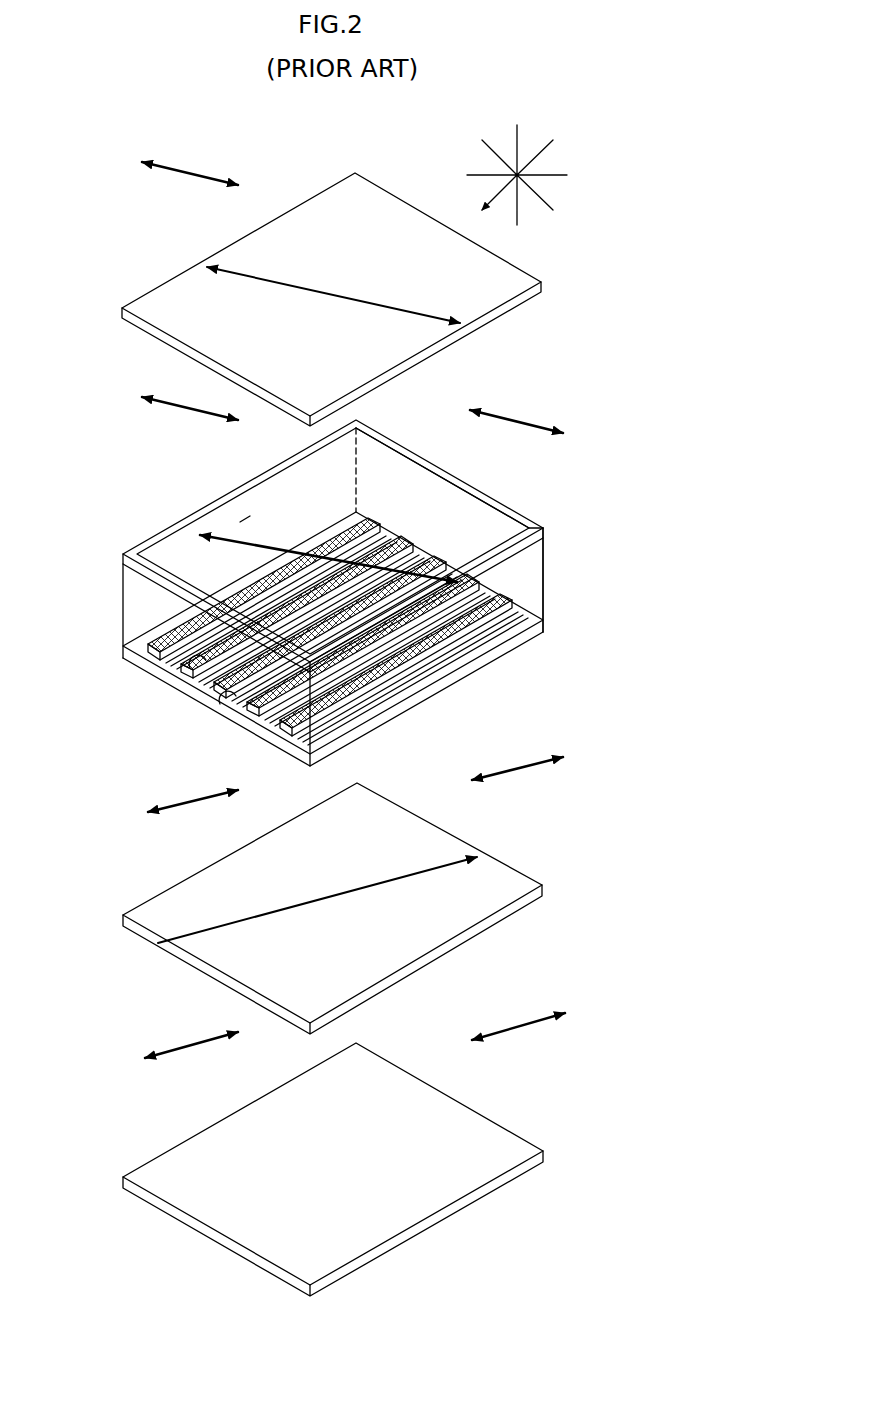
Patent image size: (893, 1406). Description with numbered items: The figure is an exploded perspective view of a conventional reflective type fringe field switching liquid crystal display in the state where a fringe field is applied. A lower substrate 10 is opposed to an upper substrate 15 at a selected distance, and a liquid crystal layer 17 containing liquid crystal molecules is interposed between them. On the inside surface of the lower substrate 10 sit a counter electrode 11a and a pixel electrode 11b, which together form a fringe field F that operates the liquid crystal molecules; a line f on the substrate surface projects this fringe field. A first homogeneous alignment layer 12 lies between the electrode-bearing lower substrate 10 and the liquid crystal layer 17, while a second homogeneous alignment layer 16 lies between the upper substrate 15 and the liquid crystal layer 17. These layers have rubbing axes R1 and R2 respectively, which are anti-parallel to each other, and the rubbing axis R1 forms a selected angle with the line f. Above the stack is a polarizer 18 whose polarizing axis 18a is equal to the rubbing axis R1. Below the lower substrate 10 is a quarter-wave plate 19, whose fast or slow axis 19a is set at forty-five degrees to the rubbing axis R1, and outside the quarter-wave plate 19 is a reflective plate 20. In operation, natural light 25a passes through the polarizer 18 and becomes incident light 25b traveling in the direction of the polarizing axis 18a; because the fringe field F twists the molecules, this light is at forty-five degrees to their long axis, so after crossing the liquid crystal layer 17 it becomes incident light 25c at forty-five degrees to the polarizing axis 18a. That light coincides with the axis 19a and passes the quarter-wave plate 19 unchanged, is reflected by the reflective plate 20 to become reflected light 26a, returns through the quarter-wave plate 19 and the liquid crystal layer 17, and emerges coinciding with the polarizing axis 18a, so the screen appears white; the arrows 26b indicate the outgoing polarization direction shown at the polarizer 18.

The lower substrate 10 is at (533, 627).
The counter electrode 11a is at (153, 662).
The pixel electrode 11b is at (200, 676).
The first homogeneous alignment layer 12 is at (477, 658).
The upper substrate 15 is at (543, 538).
The second homogeneous alignment layer 16 is at (123, 575).
The liquid crystal layer 17 is at (530, 596).
The polarizer 18 is at (428, 351).
The polarizing axis 18a is at (267, 281).
The λ/4 plate 19 is at (443, 945).
The fast (or slow) axis 19a is at (203, 930).
The reflective plate 20 is at (443, 1208).
The natural light 25a is at (518, 198).
The incident light 25b is at (518, 426).
The incident light 25c is at (517, 770).
The reflected light 26a is at (185, 808).
The polarization direction 26b is at (188, 173).
The fringe field F is at (190, 666).
The line projecting the fringe field f is at (222, 702).
The rubbing axis R1 is at (240, 522).
The rubbing axis R2 is at (200, 537).